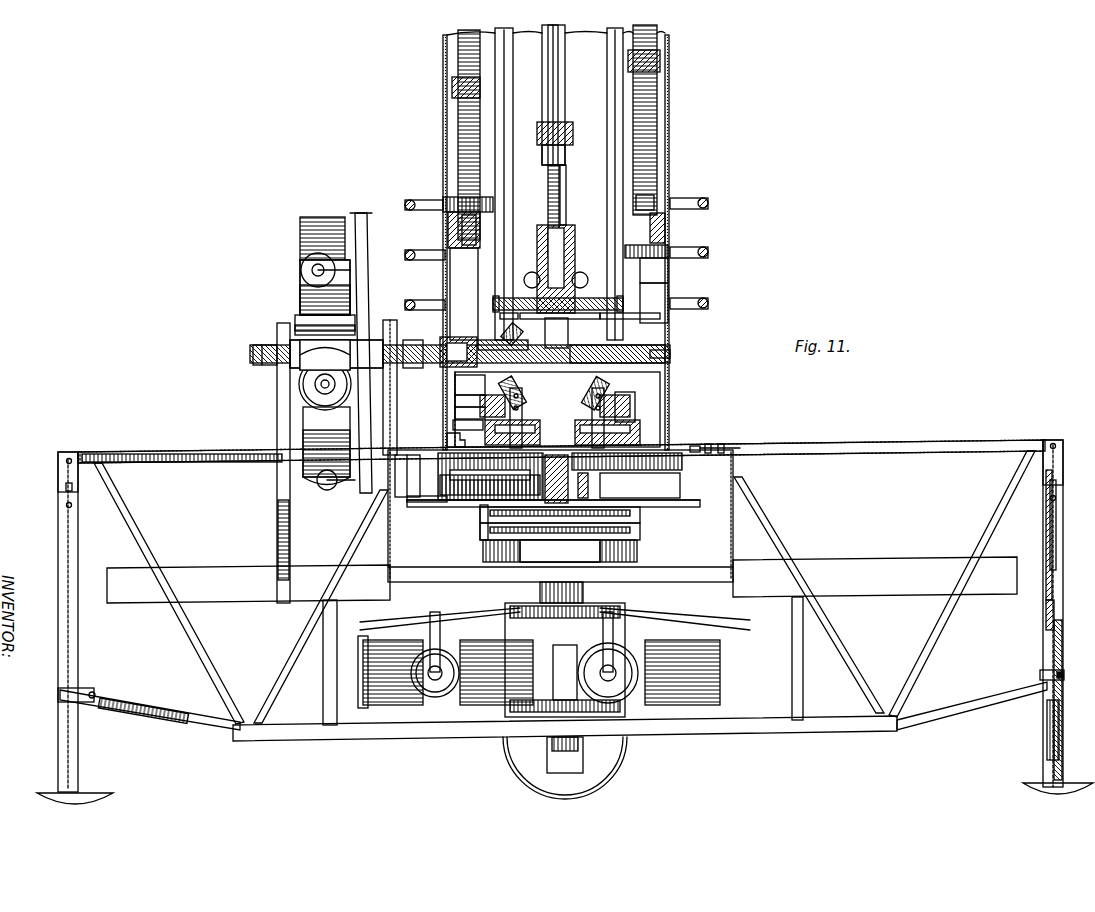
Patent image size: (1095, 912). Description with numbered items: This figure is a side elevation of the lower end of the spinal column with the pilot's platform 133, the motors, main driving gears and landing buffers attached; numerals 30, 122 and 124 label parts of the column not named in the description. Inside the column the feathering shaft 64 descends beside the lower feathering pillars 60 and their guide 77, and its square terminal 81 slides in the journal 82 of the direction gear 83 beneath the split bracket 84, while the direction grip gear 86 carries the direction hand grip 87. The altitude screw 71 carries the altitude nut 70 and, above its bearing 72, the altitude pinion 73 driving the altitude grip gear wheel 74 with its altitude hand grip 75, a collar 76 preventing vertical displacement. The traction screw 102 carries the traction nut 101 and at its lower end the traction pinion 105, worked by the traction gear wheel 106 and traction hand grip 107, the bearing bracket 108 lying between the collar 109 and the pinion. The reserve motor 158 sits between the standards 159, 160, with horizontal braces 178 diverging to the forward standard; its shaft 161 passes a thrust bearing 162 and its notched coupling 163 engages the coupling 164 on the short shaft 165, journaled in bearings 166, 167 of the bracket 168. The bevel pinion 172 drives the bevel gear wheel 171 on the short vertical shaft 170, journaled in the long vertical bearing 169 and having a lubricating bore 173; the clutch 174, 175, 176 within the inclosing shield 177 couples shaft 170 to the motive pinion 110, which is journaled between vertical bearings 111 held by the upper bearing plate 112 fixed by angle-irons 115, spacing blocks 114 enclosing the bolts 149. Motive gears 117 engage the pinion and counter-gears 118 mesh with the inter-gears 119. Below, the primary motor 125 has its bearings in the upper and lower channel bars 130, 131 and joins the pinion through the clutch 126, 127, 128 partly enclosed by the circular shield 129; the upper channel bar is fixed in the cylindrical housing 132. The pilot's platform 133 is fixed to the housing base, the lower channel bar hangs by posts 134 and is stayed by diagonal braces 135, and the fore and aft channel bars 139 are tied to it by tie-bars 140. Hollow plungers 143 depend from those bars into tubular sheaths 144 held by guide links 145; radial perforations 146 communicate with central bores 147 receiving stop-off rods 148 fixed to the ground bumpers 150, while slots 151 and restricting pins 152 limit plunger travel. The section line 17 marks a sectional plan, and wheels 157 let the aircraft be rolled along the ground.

The column housing 30 is at (443, 50).
The altitude nut 70 is at (452, 85).
The altitude screw 71 is at (458, 135).
The altitude pinion 73 is at (445, 197).
The journal 82 is at (448, 226).
The bearing 72 is at (462, 238).
The collar 76 is at (464, 250).
The direction gear 83 is at (493, 302).
The guide tube 122 is at (506, 163).
The feathering pillars 60 is at (553, 95).
The feathering shaft 64 is at (560, 105).
The guide 77 is at (572, 133).
The spindle shoulder 124 is at (612, 152).
The terminal 81 is at (560, 200).
The bearing bracket 108 is at (635, 230).
The split bracket 84 is at (575, 268).
The traction nut 101 is at (660, 58).
The traction screw 102 is at (657, 105).
The collar 109 is at (655, 200).
The altitude grip gear wheel 74 is at (670, 212).
The altitude hand grip 75 is at (708, 203).
The traction pinion 105 is at (648, 258).
The traction hand grip 107 is at (708, 252).
The traction gear wheel 106 is at (670, 258).
The direction hand grip 87 is at (708, 302).
The direction grip gear 86 is at (670, 310).
The short shaft 165 is at (460, 354).
The reserve motor shaft 161 is at (425, 335).
The section line 17 is at (500, 316).
The short vertical shaft 170 is at (564, 317).
The longitudinal bore 173 is at (570, 330).
The horizontal bearing 166 is at (495, 343).
The horizontal bearing 167 is at (524, 333).
The bracket 168 is at (640, 345).
The long vertical bearing 169 is at (670, 365).
The clutch part 176 is at (660, 410).
The clutch part 174 is at (640, 430).
The bevel pinion 172 is at (505, 385).
The bevel gear wheel 171 is at (610, 380).
The clutch part 175 is at (635, 408).
The thrust bearing 162 is at (445, 370).
The notched coupling 163 is at (447, 388).
The coupling 164 is at (460, 412).
The inclosing shield 177 is at (460, 425).
The angle-irons 115 is at (447, 444).
The inter-gears 119 is at (490, 468).
The motive gears 117 is at (485, 485).
The counter-gears 118 is at (682, 462).
The motive pinion 110 is at (590, 484).
The vertical bearings 111 is at (640, 505).
The clutch part 127 is at (640, 515).
The manipulative clutch part 128 is at (640, 532).
The circular shield 129 is at (480, 545).
The clutch part 126 is at (560, 551).
The spacing blocks 114 is at (412, 470).
The bolts 149 is at (422, 505).
The cylindrical housing 132 is at (733, 530).
The upper channel bar 130 is at (650, 572).
The upper bearing plate 112 is at (690, 448).
The upright standard 160 is at (283, 330).
The upright standard 159 is at (390, 322).
The reserve motor 158 is at (310, 270).
The horizontal braces 178 is at (220, 462).
The fore and aft channel bars 139 is at (915, 449).
The tubular sheaths 144 is at (60, 524).
The hollow plungers 143 is at (60, 472).
The elongated slots 151 is at (66, 488).
The restricting pins 152 is at (66, 506).
The ground bumpers 150 is at (113, 796).
The tie-bars 140 is at (185, 627).
The diagonal braces 135 is at (280, 660).
The pilot's platform 133 is at (235, 603).
The posts 134 is at (323, 690).
The lower channel bar 131 is at (725, 735).
The guide links 145 is at (152, 724).
The central bores 147 is at (1046, 640).
The stop-off rods 148 is at (1042, 672).
The radial perforations 146 is at (1047, 705).
The primary motor 125 is at (668, 690).
The wheels 157 is at (615, 770).